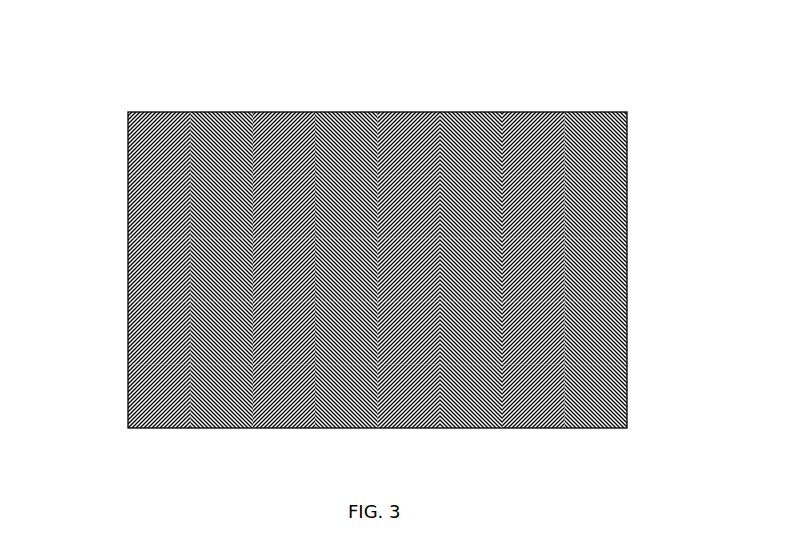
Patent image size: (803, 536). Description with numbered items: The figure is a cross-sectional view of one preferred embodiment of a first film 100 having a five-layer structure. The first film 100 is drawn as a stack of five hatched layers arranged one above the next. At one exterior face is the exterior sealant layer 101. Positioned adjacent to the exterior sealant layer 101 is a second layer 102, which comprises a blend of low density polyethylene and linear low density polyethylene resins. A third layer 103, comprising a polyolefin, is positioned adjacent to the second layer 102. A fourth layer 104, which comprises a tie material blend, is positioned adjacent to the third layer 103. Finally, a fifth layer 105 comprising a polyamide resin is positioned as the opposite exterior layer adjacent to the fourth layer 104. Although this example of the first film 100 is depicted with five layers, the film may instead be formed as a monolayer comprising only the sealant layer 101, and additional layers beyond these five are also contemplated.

The first film 100 is at (313, 109).
The exterior sealant layer 101 is at (128, 395).
The second layer 102 is at (627, 335).
The third layer 103 is at (128, 270).
The fourth layer 104 is at (627, 210).
The fifth layer 105 is at (128, 144).